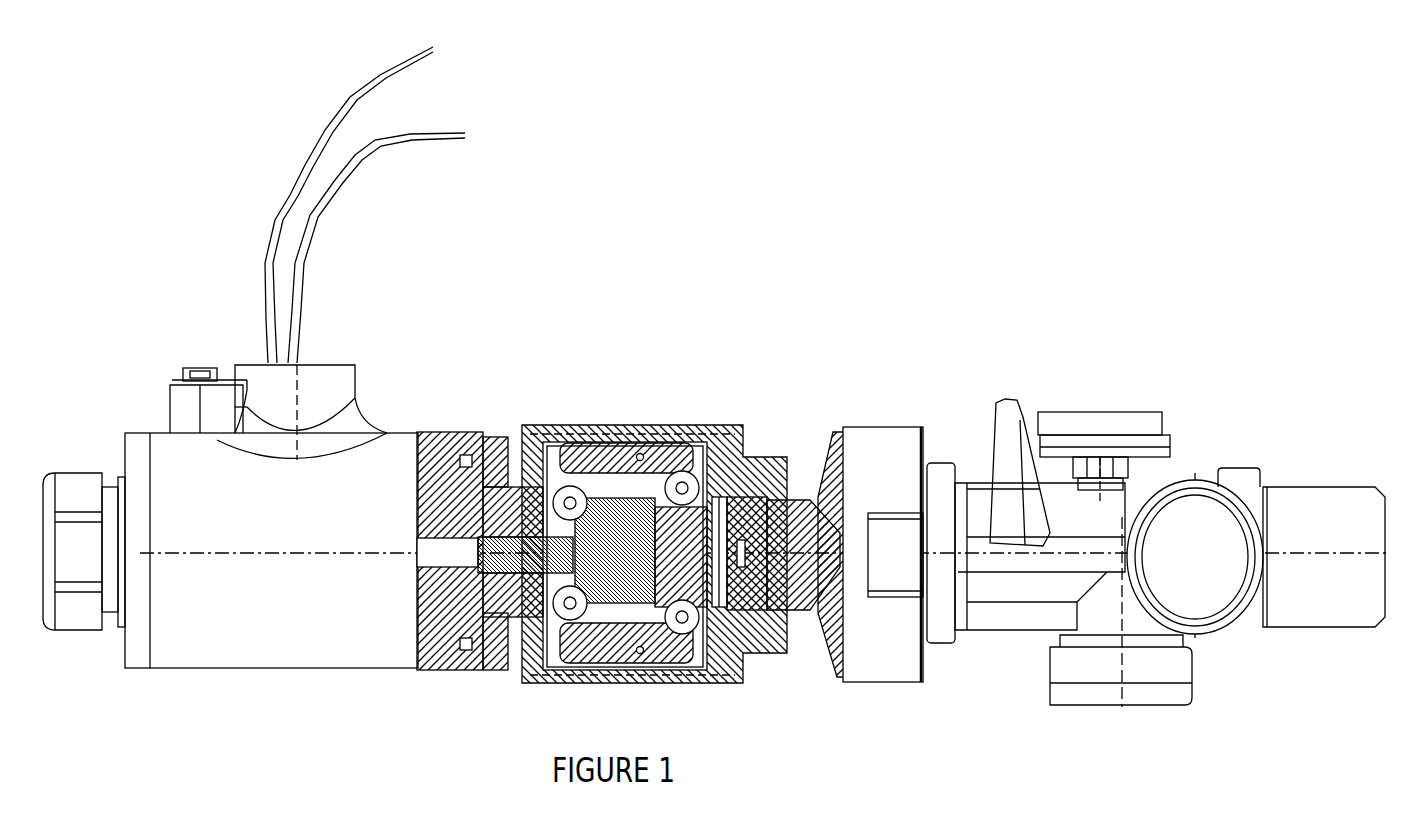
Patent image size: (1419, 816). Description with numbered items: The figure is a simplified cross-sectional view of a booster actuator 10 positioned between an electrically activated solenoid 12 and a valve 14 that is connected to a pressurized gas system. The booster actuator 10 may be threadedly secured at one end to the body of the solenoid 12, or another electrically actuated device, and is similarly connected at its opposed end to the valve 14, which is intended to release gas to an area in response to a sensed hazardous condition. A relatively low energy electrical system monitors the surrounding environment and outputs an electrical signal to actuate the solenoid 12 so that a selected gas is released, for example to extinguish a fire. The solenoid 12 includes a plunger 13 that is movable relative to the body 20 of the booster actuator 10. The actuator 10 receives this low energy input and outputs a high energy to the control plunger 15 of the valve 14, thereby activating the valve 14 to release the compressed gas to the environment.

The booster actuator 10 is at (708, 367).
The solenoid 12 is at (488, 382).
The plunger 13 is at (427, 663).
The valve 14 is at (1003, 363).
The control plunger 15 is at (789, 612).
The body 20 is at (552, 423).